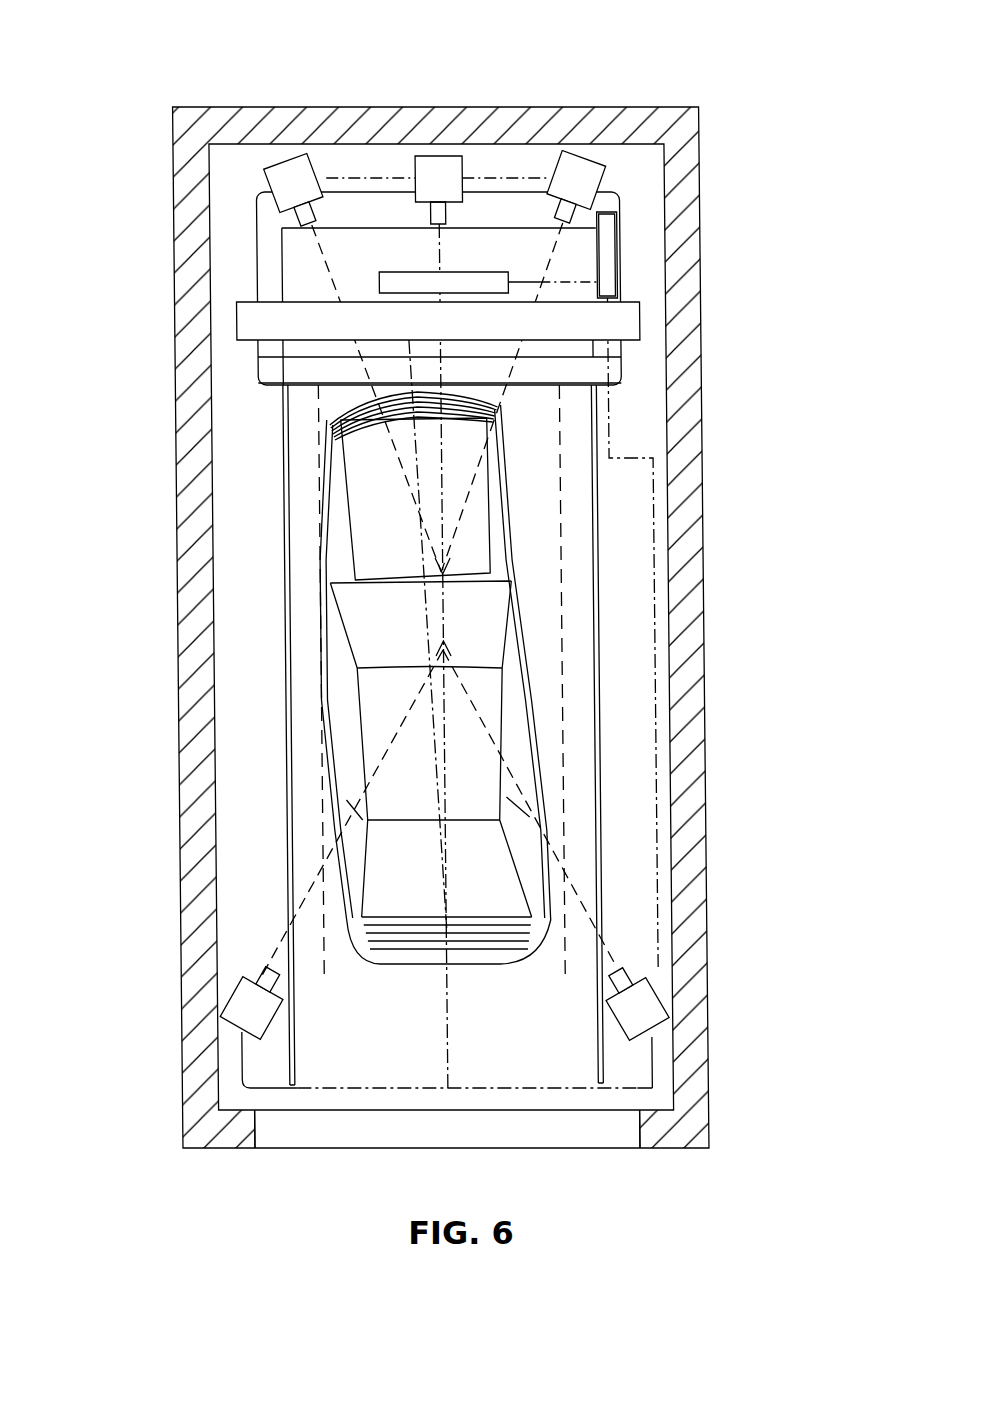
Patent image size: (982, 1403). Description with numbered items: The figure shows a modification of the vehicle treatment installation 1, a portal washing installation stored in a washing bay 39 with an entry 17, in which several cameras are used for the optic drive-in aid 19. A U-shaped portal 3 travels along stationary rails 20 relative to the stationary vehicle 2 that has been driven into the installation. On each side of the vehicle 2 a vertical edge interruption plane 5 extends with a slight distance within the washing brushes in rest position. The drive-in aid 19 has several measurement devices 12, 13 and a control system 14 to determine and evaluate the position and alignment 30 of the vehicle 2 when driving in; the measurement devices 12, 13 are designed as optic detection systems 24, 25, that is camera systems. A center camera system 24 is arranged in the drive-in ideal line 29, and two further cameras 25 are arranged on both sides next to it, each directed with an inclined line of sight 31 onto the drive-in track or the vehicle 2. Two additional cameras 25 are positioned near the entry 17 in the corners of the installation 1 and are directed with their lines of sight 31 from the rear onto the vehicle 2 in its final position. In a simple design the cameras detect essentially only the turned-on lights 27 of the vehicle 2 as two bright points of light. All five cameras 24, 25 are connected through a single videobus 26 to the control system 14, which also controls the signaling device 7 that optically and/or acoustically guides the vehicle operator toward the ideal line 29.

The treatment installation 1 is at (155, 115).
The vehicle 2 is at (311, 716).
The portal 3 is at (256, 265).
The vertical edge interruption plane 5 is at (319, 983).
The signaling device 7 is at (479, 283).
The measurement device 12 is at (430, 175).
The measurement device 13 is at (299, 190).
The control system 14 is at (609, 251).
The entry 17 is at (301, 1132).
The optic drive-in aid 19 is at (242, 437).
The stationary rails 20 is at (288, 1032).
The center camera system 24 is at (438, 213).
The cameras 25 is at (440, 596).
The videobus 26 is at (484, 178).
The turned-on lights 27 is at (329, 418).
The drive-in ideal line 29 is at (439, 250).
The position and alignment 30 is at (411, 457).
The line of sight 31 is at (347, 323).
The washing bay 39 is at (189, 656).